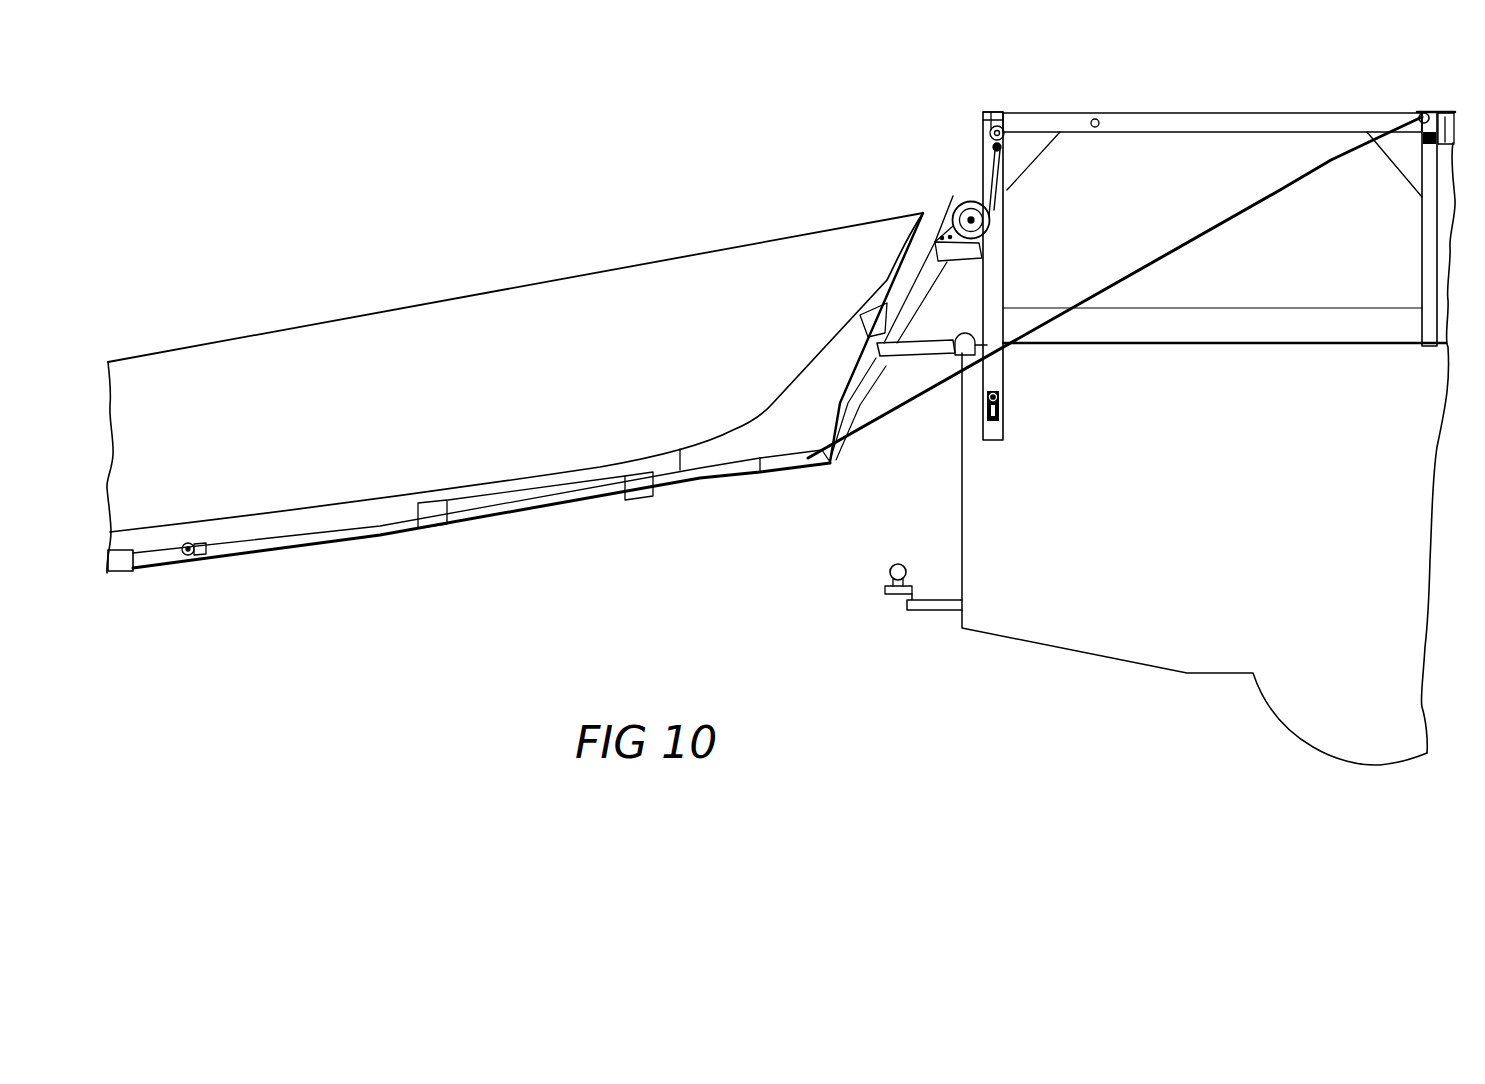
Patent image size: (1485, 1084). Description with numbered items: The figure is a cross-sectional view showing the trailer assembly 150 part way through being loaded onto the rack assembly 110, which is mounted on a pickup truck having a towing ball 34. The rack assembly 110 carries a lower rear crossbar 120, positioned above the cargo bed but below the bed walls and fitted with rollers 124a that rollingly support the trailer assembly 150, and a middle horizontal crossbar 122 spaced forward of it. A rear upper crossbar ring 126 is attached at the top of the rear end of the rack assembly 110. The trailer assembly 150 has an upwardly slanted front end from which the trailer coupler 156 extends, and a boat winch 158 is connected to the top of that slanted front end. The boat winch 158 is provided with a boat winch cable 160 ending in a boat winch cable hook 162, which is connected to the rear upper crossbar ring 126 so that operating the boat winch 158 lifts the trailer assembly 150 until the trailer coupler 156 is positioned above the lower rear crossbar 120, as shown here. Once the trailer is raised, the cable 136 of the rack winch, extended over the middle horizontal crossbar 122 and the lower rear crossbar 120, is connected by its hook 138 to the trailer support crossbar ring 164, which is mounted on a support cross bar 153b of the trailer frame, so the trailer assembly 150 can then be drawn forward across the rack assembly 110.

The towing ball 34 is at (887, 567).
The rack assembly 110 is at (1248, 110).
The lower rear crossbar 120 is at (987, 418).
The middle horizontal crossbar 122 is at (1420, 130).
The rollers 124a is at (985, 397).
The rear upper crossbar ring 126 is at (1003, 128).
The cable 136 is at (1238, 215).
The hook 138 is at (200, 549).
The trailer assembly 150 is at (360, 550).
The support cross bar 153b is at (137, 571).
The trailer coupler 156 is at (957, 339).
The boat winch 158 is at (955, 208).
The boat winch cable 160 is at (988, 178).
The boat winch cable hook 162 is at (1008, 134).
The trailer support crossbar ring 164 is at (165, 557).